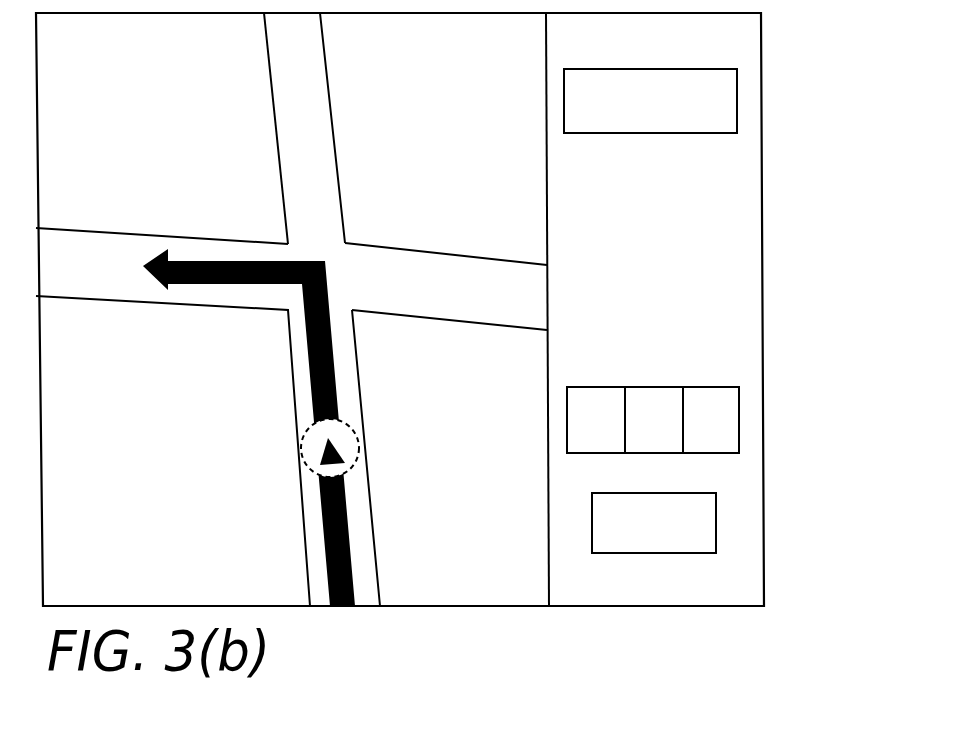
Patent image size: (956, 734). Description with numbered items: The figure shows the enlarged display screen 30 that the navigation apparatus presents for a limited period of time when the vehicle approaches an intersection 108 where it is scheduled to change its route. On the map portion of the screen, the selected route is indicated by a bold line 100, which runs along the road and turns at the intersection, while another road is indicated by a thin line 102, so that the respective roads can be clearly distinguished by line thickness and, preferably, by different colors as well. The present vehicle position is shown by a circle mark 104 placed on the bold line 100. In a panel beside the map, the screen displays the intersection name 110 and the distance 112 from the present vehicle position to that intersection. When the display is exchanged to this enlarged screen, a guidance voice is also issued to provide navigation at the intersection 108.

The enlarged display screen 30 is at (763, 302).
The bold line 100 is at (350, 533).
The thin line 102 is at (430, 260).
The circle mark 104 is at (301, 452).
The intersection 108 is at (287, 238).
The intersection name 110 is at (737, 97).
The distance 112 is at (717, 429).